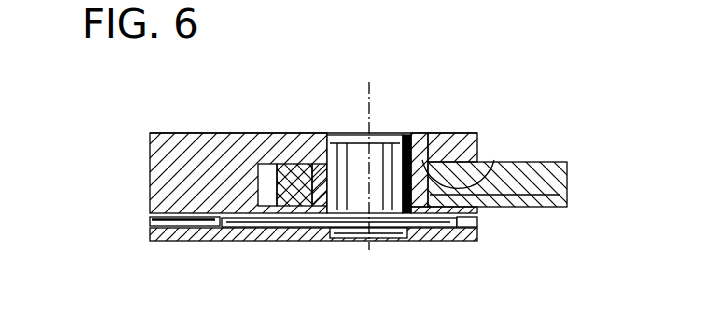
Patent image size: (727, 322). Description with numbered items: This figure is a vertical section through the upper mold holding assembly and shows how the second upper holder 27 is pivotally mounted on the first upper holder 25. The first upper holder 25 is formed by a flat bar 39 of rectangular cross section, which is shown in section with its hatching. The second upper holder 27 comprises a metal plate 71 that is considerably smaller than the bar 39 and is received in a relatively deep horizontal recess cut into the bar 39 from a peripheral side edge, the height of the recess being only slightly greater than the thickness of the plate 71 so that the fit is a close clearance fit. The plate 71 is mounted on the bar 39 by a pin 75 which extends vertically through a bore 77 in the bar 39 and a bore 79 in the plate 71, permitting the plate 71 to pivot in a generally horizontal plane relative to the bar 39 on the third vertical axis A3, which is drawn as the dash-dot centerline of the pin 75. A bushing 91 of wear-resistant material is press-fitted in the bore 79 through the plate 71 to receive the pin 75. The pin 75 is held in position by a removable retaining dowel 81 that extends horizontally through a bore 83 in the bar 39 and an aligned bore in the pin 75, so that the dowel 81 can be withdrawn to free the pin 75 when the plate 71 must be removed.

The first upper holder 25 is at (174, 128).
The flat bar 39 is at (242, 133).
The pin 75 is at (357, 155).
The vertical bore 77 is at (405, 140).
The bushing 91 is at (426, 158).
The second upper holder 27 is at (572, 178).
The vertical bore 79 is at (494, 160).
The metal plate 71 is at (530, 191).
The horizontal bore 83 is at (153, 218).
The retaining dowel 81 is at (240, 222).
The third vertical axis A3 is at (368, 100).